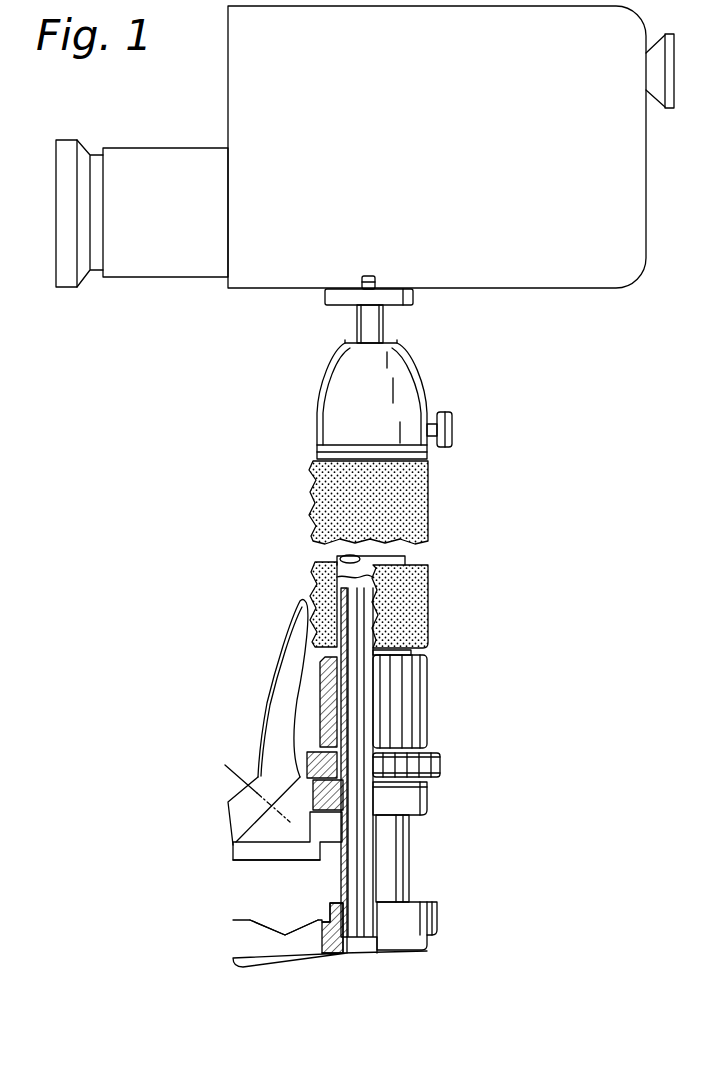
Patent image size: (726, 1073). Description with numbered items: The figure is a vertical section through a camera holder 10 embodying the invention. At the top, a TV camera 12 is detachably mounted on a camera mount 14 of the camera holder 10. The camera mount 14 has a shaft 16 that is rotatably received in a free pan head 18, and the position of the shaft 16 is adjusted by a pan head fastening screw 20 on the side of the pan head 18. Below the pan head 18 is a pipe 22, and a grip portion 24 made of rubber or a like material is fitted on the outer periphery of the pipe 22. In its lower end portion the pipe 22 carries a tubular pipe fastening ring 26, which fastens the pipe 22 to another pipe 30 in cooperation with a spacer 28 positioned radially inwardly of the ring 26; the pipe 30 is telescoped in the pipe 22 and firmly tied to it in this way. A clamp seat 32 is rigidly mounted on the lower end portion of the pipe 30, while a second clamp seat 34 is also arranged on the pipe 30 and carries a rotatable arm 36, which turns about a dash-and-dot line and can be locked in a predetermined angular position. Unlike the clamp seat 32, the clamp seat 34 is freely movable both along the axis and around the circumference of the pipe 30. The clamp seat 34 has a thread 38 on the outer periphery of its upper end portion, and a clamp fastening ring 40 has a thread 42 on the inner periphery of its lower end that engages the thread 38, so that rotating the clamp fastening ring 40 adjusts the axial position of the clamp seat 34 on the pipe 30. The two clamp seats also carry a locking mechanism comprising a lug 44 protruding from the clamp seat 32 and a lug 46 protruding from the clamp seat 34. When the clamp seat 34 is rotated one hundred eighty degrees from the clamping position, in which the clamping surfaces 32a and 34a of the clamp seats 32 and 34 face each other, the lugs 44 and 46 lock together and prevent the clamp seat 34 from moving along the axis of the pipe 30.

The camera holder 10 is at (518, 451).
The TV camera 12 is at (646, 247).
The camera mount 14 is at (413, 297).
The shaft 16 is at (383, 326).
The free pan head 18 is at (421, 373).
The pan head fastening screw 20 is at (447, 410).
The pipe 22 is at (407, 557).
The grip portion 24 is at (430, 497).
The tubular pipe fastening ring 26 is at (428, 690).
The spacer 28 is at (335, 718).
The pipe 30 is at (340, 885).
The clamp seat 32 is at (233, 921).
The clamping surface 32a is at (247, 919).
The clamp seat 34 is at (233, 850).
The clamping surface 34a is at (268, 860).
The rotatable arm 36 is at (276, 660).
The thread 38 is at (347, 772).
The clamp fastening ring 40 is at (433, 751).
The thread 42 is at (307, 762).
The lug 44 is at (440, 903).
The lug 46 is at (342, 840).